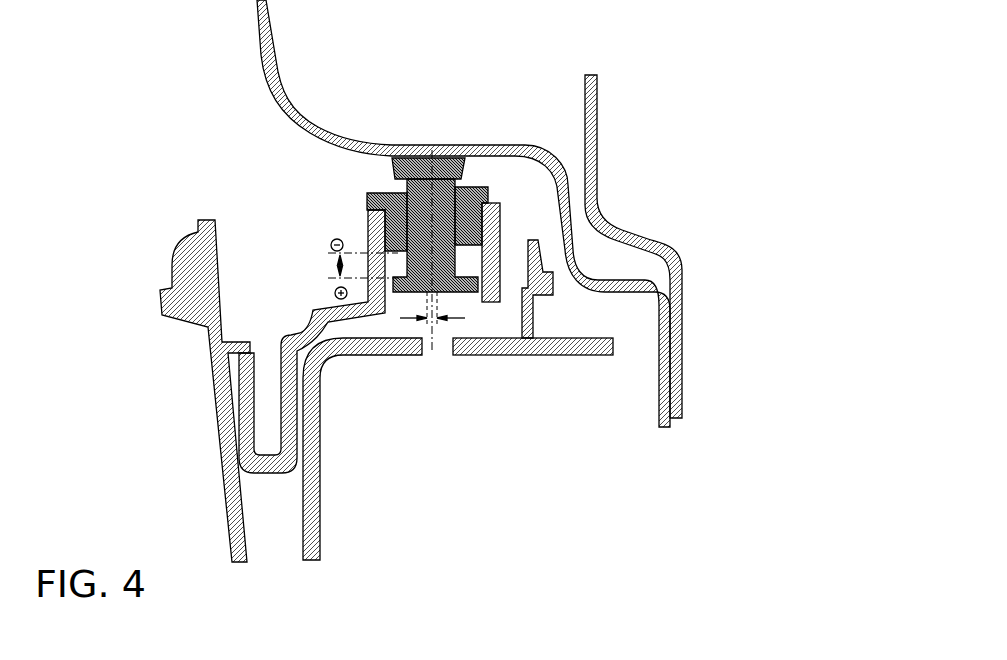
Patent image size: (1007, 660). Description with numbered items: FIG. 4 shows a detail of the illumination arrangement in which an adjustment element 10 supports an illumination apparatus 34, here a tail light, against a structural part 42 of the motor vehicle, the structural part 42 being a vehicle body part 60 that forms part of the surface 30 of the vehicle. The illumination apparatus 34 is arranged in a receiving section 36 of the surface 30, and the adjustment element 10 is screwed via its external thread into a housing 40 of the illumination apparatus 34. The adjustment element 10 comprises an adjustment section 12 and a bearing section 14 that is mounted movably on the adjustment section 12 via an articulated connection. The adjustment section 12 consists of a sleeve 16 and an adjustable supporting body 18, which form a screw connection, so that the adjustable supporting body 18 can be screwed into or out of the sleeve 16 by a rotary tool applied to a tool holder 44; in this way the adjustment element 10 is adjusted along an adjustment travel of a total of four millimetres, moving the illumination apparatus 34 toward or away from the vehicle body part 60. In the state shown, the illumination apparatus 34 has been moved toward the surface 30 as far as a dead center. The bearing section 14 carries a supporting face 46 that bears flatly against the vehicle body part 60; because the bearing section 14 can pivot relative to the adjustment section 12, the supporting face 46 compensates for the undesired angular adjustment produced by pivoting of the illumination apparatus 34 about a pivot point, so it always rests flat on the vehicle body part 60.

The adjustment element 10 is at (249, 206).
The adjustment section 12 is at (317, 189).
The bearing section 14 is at (372, 165).
The sleeve 16 is at (485, 193).
The adjustable supporting body 18 is at (448, 252).
The surface 30 is at (535, 213).
The structural part 42 is at (535, 213).
The vehicle body part 60 is at (522, 155).
The illumination apparatus 34 is at (177, 481).
The receiving section 36 is at (269, 132).
The housing 40 is at (287, 347).
The tool holder 44 is at (433, 343).
The supporting face 46 is at (446, 139).